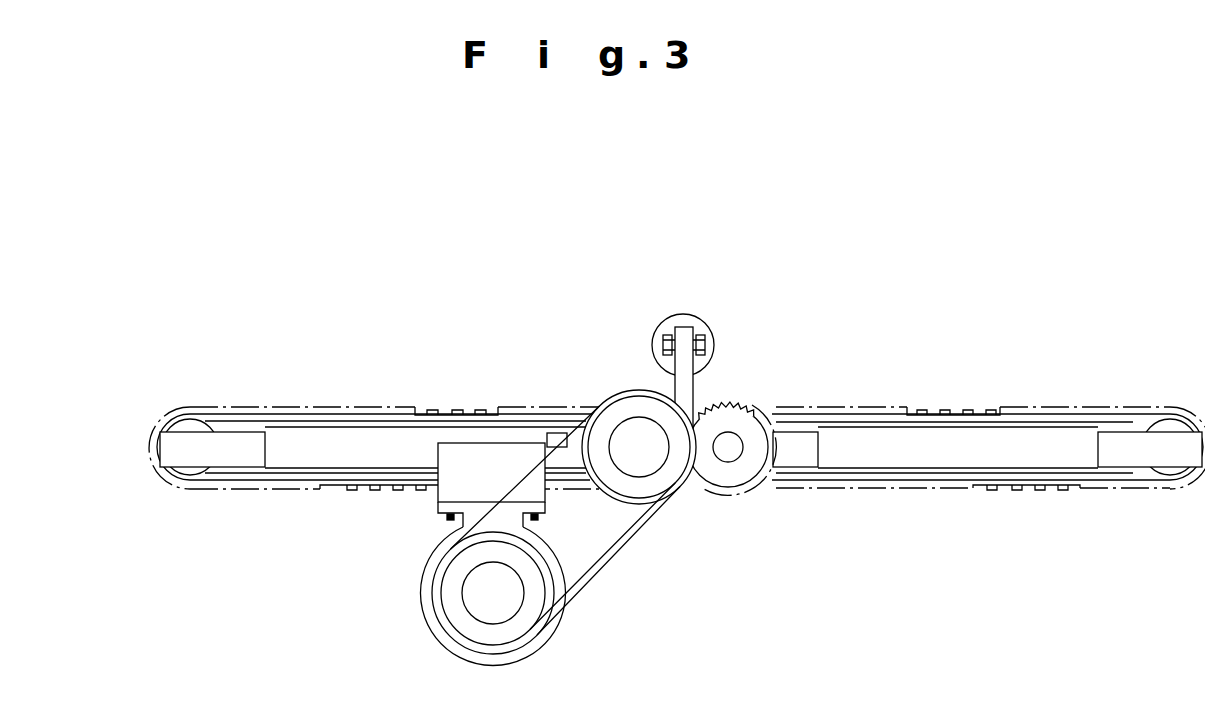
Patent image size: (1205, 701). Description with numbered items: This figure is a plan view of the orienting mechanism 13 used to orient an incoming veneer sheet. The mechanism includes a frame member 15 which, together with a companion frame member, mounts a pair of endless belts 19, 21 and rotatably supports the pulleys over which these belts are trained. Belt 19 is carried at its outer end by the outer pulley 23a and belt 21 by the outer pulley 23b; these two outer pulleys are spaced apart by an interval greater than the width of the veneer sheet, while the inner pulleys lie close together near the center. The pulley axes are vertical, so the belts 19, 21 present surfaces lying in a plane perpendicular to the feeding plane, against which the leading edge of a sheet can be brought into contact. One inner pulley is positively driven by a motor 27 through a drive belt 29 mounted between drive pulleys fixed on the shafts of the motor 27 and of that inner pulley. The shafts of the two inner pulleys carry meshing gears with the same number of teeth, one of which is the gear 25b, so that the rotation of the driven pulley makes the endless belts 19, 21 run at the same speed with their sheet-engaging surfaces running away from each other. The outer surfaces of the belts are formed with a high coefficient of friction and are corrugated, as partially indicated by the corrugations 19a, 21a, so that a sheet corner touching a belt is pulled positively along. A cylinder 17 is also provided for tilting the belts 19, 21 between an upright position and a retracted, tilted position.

The orienting mechanism 13 is at (1009, 260).
The frame member 15 is at (330, 458).
The cylinder 17 is at (713, 340).
The endless belt 19 is at (383, 404).
The corrugated surface 19a is at (455, 412).
The endless belt 21 is at (1062, 403).
The corrugated surface 21a is at (975, 407).
The outer pulley 23a is at (197, 472).
The outer pulley 23b is at (1178, 470).
The gear 25b is at (740, 427).
The motor 27 is at (548, 627).
The drive belt 29 is at (632, 540).